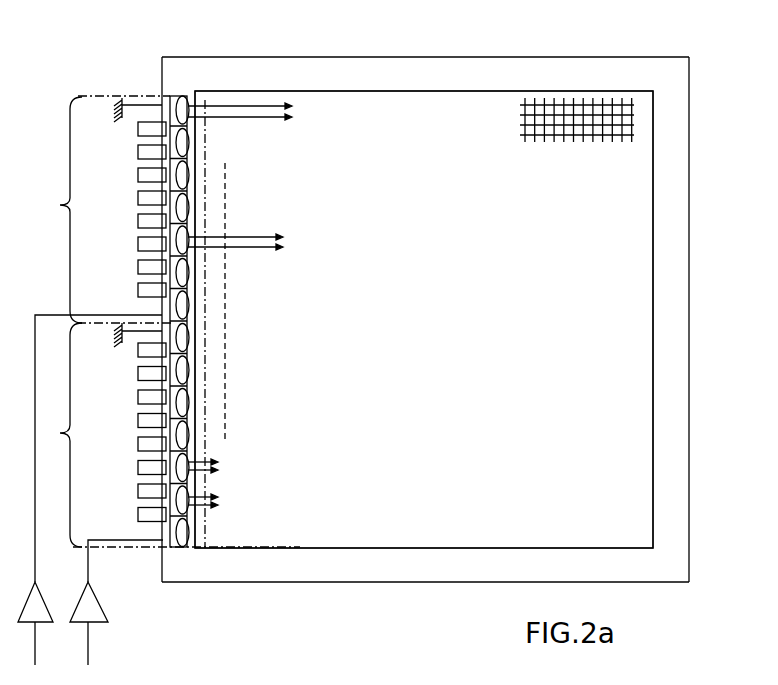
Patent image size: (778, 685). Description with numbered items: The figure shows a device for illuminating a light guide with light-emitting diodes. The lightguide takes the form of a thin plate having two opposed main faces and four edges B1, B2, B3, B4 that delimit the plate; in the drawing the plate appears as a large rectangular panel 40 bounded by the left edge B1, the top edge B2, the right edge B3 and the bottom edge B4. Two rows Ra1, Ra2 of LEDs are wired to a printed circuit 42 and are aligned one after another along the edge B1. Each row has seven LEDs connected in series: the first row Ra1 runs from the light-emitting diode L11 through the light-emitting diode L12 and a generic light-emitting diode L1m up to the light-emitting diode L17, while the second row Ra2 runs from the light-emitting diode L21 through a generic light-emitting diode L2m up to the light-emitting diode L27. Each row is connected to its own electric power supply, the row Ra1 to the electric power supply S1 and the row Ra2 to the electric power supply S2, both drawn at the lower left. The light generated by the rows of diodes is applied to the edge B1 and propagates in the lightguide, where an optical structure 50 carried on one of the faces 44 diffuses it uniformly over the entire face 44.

The printed circuit 42 is at (422, 320).
The edge of the lightguide B1 is at (160, 82).
The edge of the lightguide B2 is at (609, 57).
The edge of the lightguide B3 is at (692, 460).
The edge of the lightguide B4 is at (220, 582).
The display panel 40 is at (655, 407).
The face of the lightguide 44 is at (548, 480).
The optical structure 50 is at (604, 127).
The light-emitting diode L27 is at (188, 122).
The light-emitting diode L2m is at (188, 173).
The light-emitting diode L21 is at (188, 307).
The light-emitting diode L17 is at (190, 340).
The light-emitting diode L1m is at (188, 395).
The light-emitting diode L12 is at (188, 494).
The light-emitting diode L11 is at (188, 537).
The row of light-emitting diodes Ra2 is at (91, 210).
The row of light-emitting diodes Ra1 is at (92, 435).
The electric power supply S2 is at (50, 608).
The electric power supply S1 is at (103, 612).